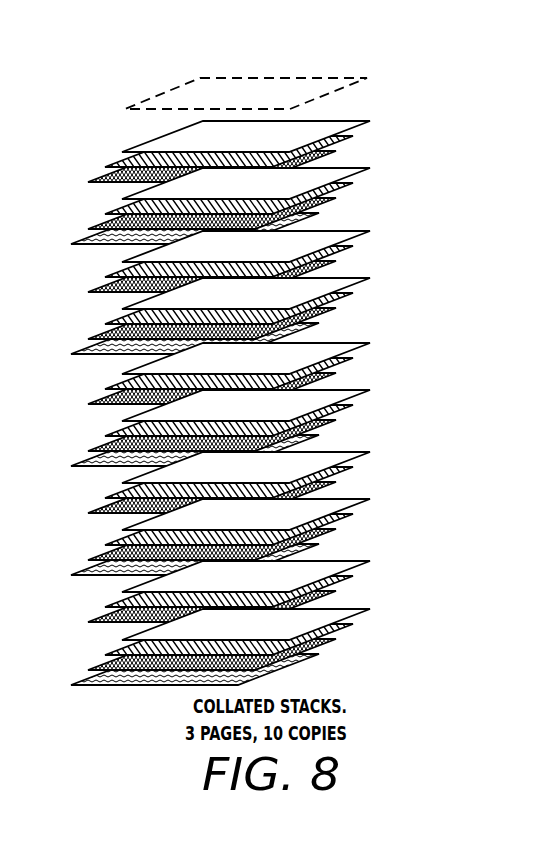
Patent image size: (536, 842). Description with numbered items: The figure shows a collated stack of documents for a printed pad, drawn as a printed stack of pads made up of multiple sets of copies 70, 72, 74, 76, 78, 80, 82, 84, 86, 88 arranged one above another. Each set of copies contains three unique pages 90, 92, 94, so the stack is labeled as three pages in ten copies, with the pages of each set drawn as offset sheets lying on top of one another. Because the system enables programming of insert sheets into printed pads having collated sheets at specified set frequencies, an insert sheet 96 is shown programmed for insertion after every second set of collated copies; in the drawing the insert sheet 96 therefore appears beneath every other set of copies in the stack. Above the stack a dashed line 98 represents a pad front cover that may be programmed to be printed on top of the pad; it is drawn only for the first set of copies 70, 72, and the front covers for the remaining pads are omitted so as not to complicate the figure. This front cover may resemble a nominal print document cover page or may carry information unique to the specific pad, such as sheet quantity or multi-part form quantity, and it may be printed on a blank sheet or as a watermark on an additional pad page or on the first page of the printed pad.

The set of copies 70 is at (220, 139).
The set of copies 72 is at (215, 194).
The set of copies 74 is at (370, 231).
The set of copies 76 is at (370, 278).
The set of copies 78 is at (370, 343).
The set of copies 80 is at (370, 390).
The set of copies 82 is at (370, 452).
The set of copies 84 is at (370, 499).
The set of copies 86 is at (370, 561).
The set of copies 88 is at (370, 609).
The unique page 90 is at (163, 136).
The unique page 92 is at (122, 162).
The unique page 94 is at (103, 181).
The insert sheet 96 is at (82, 238).
The front cover 98 is at (258, 77).